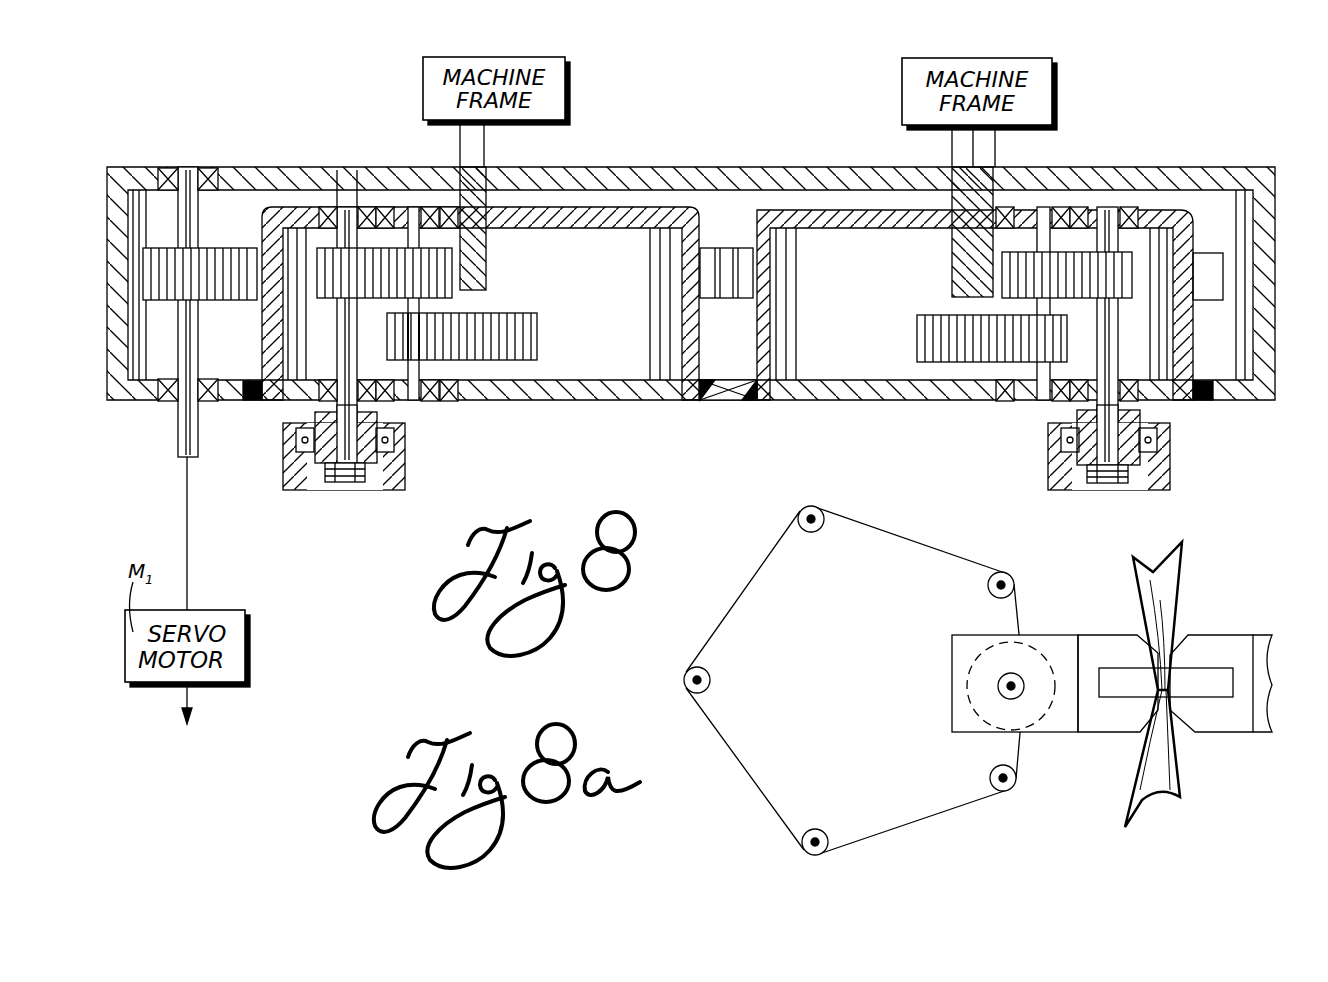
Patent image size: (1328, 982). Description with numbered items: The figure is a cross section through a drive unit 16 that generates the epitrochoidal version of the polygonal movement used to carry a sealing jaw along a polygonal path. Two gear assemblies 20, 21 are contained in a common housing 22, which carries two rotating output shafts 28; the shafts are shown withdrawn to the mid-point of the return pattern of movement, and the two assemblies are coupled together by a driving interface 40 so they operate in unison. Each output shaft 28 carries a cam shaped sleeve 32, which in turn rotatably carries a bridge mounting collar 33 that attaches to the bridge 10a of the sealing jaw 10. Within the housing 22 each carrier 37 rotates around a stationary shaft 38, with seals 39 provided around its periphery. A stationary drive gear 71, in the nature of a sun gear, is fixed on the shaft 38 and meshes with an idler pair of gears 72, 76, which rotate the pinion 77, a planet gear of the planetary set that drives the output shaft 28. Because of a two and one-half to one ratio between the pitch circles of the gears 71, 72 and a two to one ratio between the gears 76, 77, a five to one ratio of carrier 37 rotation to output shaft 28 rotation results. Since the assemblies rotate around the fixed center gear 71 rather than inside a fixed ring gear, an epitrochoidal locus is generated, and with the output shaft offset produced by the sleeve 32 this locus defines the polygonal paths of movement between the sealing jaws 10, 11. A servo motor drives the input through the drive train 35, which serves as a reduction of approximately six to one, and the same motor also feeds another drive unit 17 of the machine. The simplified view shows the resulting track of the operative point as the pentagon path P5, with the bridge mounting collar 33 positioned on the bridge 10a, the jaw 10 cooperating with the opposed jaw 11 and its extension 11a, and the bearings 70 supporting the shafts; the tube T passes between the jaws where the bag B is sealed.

In FIG. 8, the drive train 35 is at (137, 167).
In FIG. 8, the housing 22 is at (665, 178).
In FIG. 8, the carrier 37 is at (607, 403).
In FIG. 8, the gear assembly 21 is at (855, 403).
In FIG. 8, the seals 39 is at (713, 403).
In FIG. 8, the driving interface 40 is at (717, 233).
In FIG. 8, the output shaft 28 is at (343, 420).
In FIG. 8, the gear assembly 20 is at (345, 167).
In FIG. 8, the idler gear 76 is at (410, 235).
In FIG. 8, the pinion 77 is at (335, 262).
In FIG. 8, the stationary drive gear 71 is at (513, 338).
In FIG. 8, the idler gear 72 is at (423, 340).
In FIG. 8, the bearing 70 is at (453, 367).
In FIG. 8, the stationary shaft 38 is at (465, 185).
In FIG. 8, the drive unit 16 is at (812, 141).
In FIG. 8, the bridge mounting collar 33 is at (395, 470).
In FIG. 8A, the bridge mounting collar 33 is at (1047, 657).
In FIG. 8, the cam shaped sleeve 32 is at (365, 490).
In FIG. 8, the drive unit 17 is at (174, 729).
In FIG. 8A, the pentagon path P5 is at (922, 825).
In FIG. 8A, the bridge 10a is at (1063, 720).
In FIG. 8A, the sealing jaw 10 is at (1112, 718).
In FIG. 8A, the sealing jaw 11 is at (1207, 722).
In FIG. 8A, the jaw extension 11a is at (1262, 718).
In FIG. 8A, the tube T is at (1180, 580).
In FIG. 8A, the bag B is at (1180, 785).